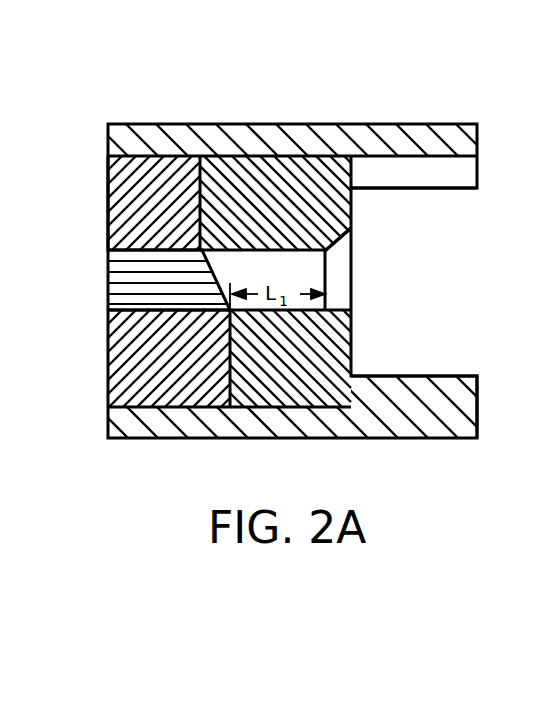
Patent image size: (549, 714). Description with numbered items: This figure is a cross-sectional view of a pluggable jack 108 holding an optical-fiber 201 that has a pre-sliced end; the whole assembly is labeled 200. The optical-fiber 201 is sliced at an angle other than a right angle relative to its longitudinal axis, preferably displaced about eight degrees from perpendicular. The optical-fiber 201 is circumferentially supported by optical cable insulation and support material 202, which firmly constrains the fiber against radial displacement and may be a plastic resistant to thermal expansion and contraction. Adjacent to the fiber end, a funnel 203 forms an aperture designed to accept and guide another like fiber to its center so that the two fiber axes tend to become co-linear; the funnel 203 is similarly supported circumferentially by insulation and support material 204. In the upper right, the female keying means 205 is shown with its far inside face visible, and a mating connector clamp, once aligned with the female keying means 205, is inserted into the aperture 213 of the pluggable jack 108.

The mask assembly 200 is at (328, 281).
The pluggable jack 108 is at (424, 135).
The optical-fiber 201 is at (110, 285).
The optical cable insulation and support material 202 is at (170, 180).
The funnel 203 is at (352, 237).
The insulation and support material 204 is at (242, 180).
The female keying means 205 is at (465, 171).
The aperture 213 is at (460, 377).